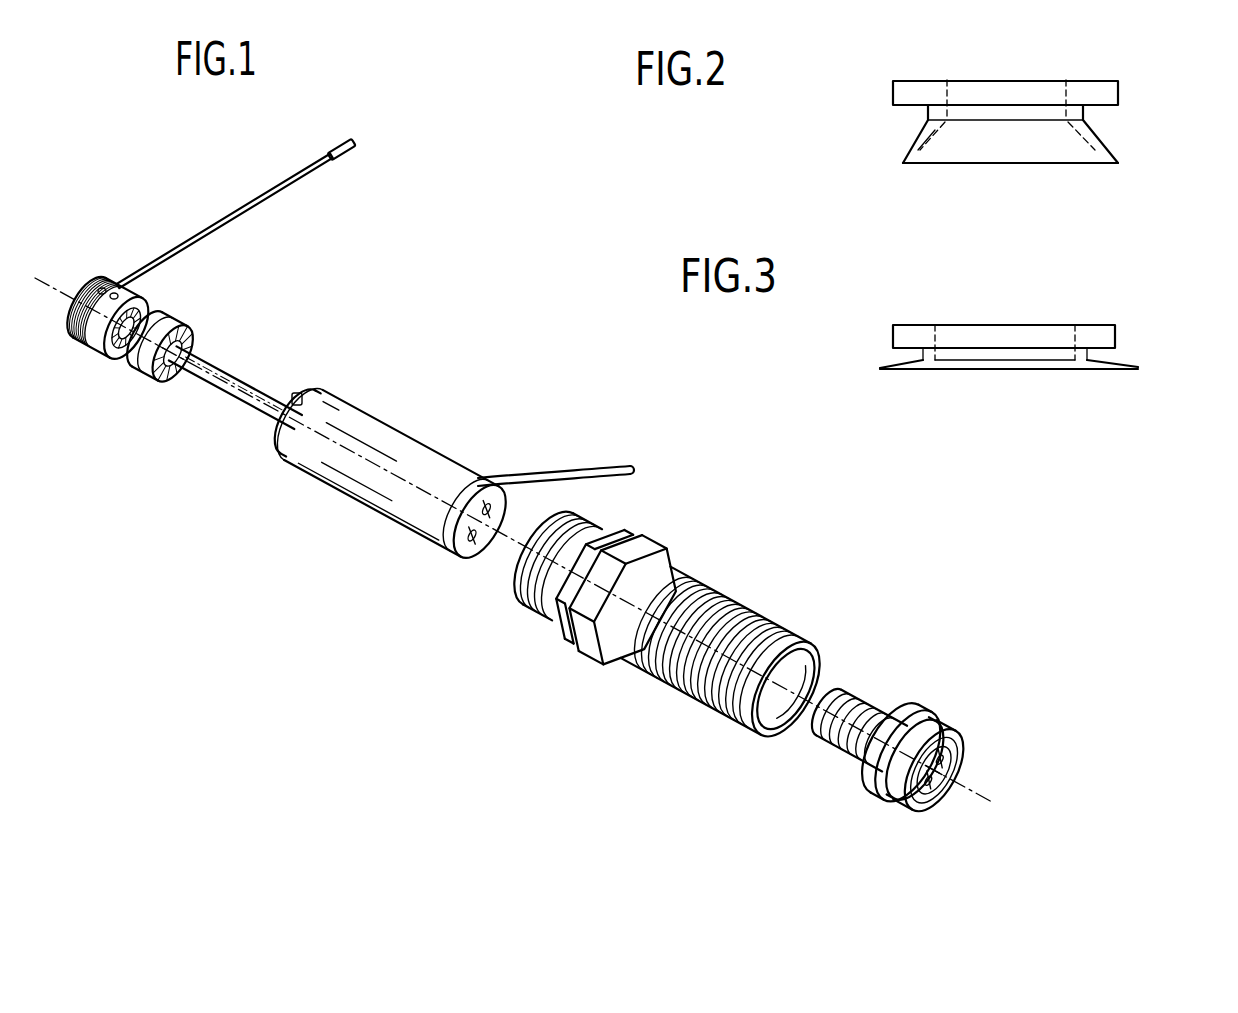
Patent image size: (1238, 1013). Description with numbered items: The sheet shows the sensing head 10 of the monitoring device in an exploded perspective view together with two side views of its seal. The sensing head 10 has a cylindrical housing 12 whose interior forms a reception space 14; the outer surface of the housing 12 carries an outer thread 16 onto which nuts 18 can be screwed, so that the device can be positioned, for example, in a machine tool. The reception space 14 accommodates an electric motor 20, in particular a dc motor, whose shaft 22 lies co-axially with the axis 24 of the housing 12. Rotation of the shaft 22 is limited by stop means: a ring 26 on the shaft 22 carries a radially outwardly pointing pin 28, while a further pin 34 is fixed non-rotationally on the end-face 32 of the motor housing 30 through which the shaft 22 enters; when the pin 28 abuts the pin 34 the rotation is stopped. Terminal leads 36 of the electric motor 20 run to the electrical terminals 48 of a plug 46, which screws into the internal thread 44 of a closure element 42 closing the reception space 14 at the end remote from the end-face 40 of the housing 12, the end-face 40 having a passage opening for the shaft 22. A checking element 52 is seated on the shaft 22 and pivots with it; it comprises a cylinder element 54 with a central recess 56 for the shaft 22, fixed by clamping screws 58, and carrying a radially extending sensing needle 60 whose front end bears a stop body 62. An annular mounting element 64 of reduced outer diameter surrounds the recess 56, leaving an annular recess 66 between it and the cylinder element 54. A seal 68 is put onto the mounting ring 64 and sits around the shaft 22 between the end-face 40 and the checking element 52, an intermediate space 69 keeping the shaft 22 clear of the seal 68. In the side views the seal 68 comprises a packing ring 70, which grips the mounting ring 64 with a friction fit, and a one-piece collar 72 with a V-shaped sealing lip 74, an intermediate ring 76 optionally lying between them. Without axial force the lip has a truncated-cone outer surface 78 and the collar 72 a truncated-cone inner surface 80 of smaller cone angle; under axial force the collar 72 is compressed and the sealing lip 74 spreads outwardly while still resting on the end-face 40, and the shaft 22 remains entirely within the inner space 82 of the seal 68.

In FIG. 1, the sensing head 10 is at (513, 539).
In FIG. 1, the cylindrical housing 12 is at (652, 685).
In FIG. 1, the reception space 14 is at (820, 652).
In FIG. 1, the outer thread 16 is at (713, 590).
In FIG. 1, the nuts 18 is at (610, 530).
In FIG. 1, the electric motor 20 is at (333, 493).
In FIG. 1, the shaft 22 is at (225, 380).
In FIG. 1, the axis 24 is at (880, 705).
In FIG. 1, the ring 26 is at (290, 425).
In FIG. 1, the pin 28 is at (297, 395).
In FIG. 1, the motor housing 30 is at (383, 437).
In FIG. 1, the end-face of motor housing 32 is at (322, 412).
In FIG. 1, the further pin 34 is at (303, 405).
In FIG. 1, the terminal leads 36 is at (531, 469).
In FIG. 1, the end-face of housing 40 is at (548, 520).
In FIG. 1, the closure element 42 is at (923, 707).
In FIG. 1, the internal thread 44 is at (957, 727).
In FIG. 1, the plug 46 is at (963, 770).
In FIG. 1, the electrical terminals 48 is at (963, 743).
In FIG. 1, the checking element 52 is at (72, 300).
In FIG. 1, the cylinder element 54 is at (100, 289).
In FIG. 1, the central recess 56 is at (107, 355).
In FIG. 1, the clamping screws 58 is at (112, 293).
In FIG. 1, the sensing needle 60 is at (298, 178).
In FIG. 1, the stop body 62 is at (348, 153).
In FIG. 1, the annular mounting element (mounting ring) 64 is at (190, 318).
In FIG. 1, the annular recess 66 is at (138, 365).
In FIG. 1, the seal 68 is at (160, 385).
In FIG. 2, the seal 68 is at (928, 78).
In FIG. 3, the seal 68 is at (940, 297).
In FIG. 1, the intermediate space 69 is at (180, 352).
In FIG. 2, the packing ring 70 is at (928, 95).
In FIG. 3, the packing ring 70 is at (925, 335).
In FIG. 2, the collar 72 is at (1112, 135).
In FIG. 3, the collar 72 is at (1100, 378).
In FIG. 2, the sealing lip 74 is at (903, 163).
In FIG. 3, the sealing lip 74 is at (920, 369).
In FIG. 2, the intermediate ring 76 is at (930, 113).
In FIG. 3, the intermediate ring 76 is at (1090, 353).
In FIG. 2, the outer surface 78 is at (920, 125).
In FIG. 2, the inner surface 80 is at (935, 137).
In FIG. 2, the inner space 82 is at (1010, 142).
In FIG. 3, the inner space 82 is at (990, 334).